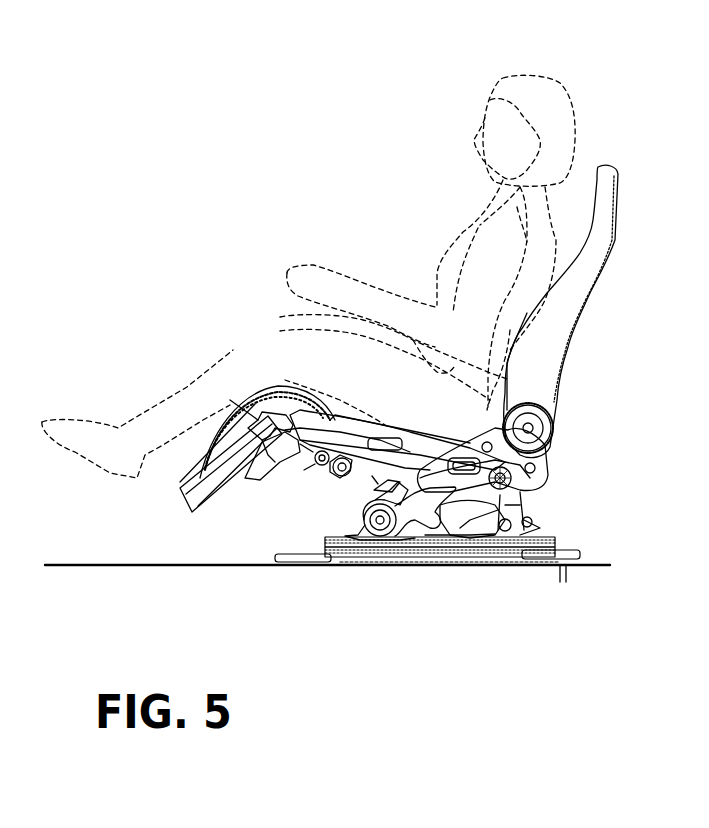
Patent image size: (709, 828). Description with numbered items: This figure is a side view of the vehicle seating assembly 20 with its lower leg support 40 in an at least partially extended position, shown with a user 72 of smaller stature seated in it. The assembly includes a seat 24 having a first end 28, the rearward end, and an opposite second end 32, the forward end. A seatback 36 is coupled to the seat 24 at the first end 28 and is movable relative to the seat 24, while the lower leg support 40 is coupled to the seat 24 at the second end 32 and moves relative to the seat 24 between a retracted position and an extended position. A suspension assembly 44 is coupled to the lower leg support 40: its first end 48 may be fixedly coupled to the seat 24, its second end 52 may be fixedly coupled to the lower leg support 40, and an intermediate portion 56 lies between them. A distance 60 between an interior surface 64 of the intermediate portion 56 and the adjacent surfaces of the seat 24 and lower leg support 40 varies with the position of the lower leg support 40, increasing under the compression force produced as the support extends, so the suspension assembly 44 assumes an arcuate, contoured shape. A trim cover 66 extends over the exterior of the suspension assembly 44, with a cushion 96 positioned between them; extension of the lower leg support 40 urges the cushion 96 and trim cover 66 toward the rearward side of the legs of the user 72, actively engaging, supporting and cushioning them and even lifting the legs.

The vehicle seating assembly 20 is at (620, 236).
The seat 24 is at (374, 424).
The first end 28 is at (538, 488).
The second end 32 is at (311, 460).
The seatback 36 is at (542, 362).
The lower leg support 40 is at (208, 497).
The suspension assembly 44 is at (245, 480).
The first end 48 is at (345, 448).
The second end 52 is at (180, 486).
The intermediate portion 56 is at (258, 420).
The distance 60 is at (302, 420).
The interior surface 64 is at (275, 425).
The trim cover 66 is at (217, 450).
The user 72 is at (573, 95).
The cushion 96 is at (193, 463).